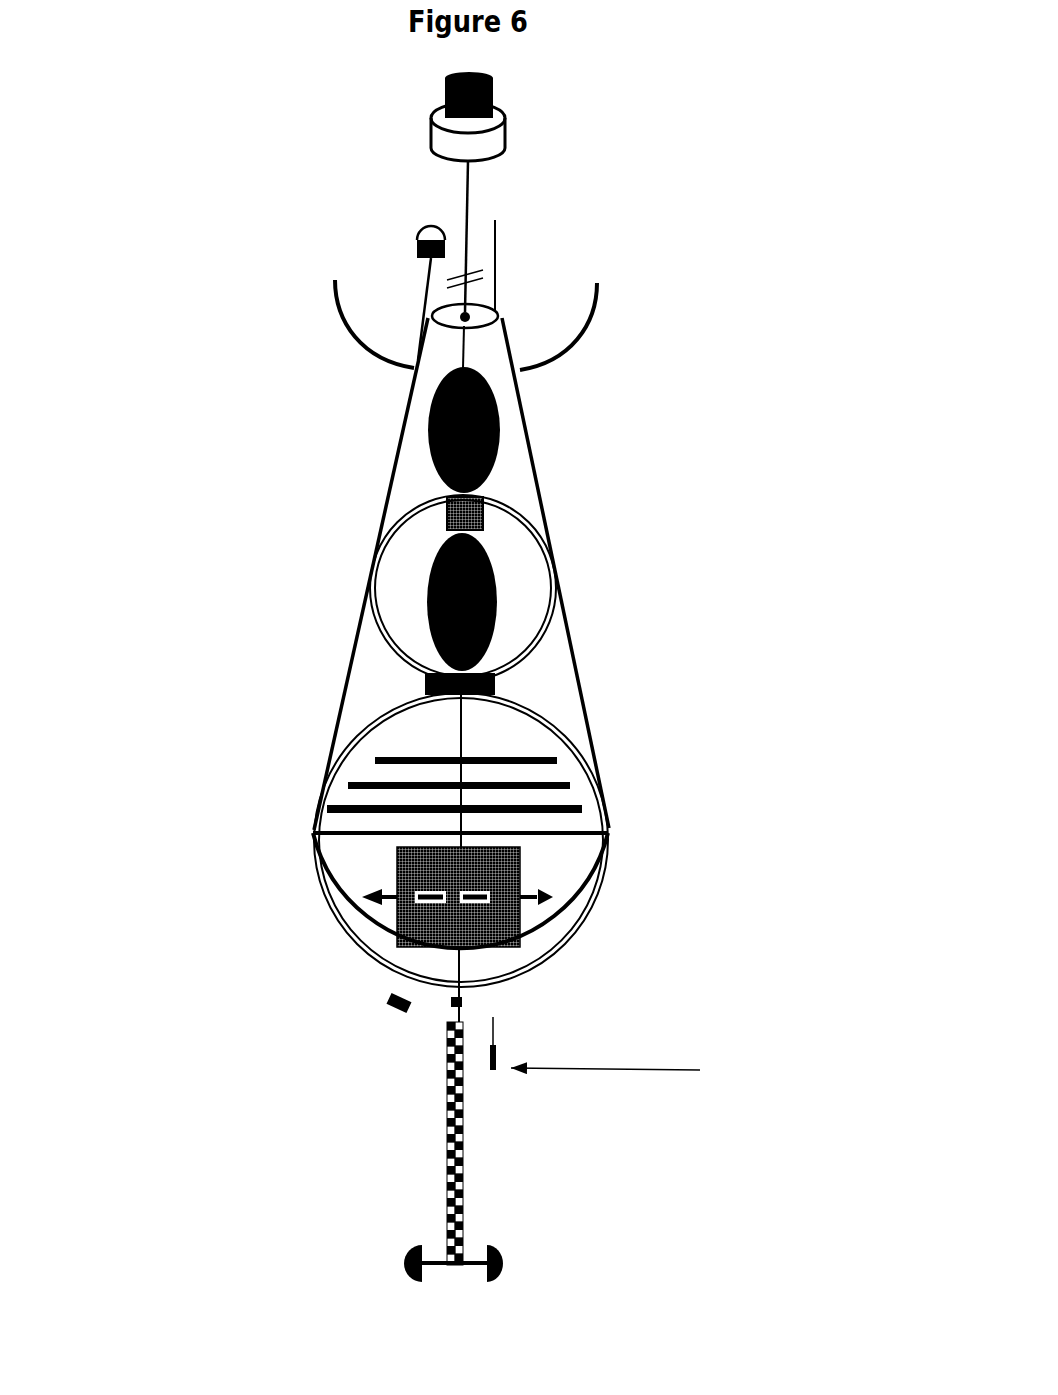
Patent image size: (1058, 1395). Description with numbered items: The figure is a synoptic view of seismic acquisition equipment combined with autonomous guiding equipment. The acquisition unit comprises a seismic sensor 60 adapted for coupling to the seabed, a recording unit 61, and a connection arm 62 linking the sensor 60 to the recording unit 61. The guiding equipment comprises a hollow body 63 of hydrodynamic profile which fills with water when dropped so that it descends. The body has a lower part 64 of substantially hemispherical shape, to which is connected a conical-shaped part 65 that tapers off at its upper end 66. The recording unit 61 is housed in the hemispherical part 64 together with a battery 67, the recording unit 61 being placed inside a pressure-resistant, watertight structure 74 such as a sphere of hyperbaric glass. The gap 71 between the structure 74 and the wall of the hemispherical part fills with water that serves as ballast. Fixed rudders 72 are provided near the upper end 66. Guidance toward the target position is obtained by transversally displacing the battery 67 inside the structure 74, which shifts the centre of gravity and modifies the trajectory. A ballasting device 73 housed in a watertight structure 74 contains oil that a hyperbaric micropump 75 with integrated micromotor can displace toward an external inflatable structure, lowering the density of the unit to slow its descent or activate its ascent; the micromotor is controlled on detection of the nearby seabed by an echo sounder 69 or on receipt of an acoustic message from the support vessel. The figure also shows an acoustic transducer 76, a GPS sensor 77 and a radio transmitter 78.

The seismic sensor 60 is at (528, 1258).
The recording unit 61 is at (623, 775).
The connection arm 62 is at (483, 1157).
The body 63 is at (348, 624).
The lower part 64 is at (325, 937).
The conical-shaped part 65 is at (373, 428).
The upper end 66 is at (492, 310).
The battery 67 is at (498, 885).
The echo sounder 69 is at (376, 1005).
The gap 71 is at (510, 983).
The rudders 72 is at (603, 343).
The ballasting device 73 is at (511, 438).
The pressure-resistant watertight structure 74 is at (526, 660).
The hyperbaric micropump 75 is at (515, 503).
The acoustic transducer 76 is at (532, 92).
The GPS sensor 77 is at (384, 235).
The radio transmitter 78 is at (510, 215).